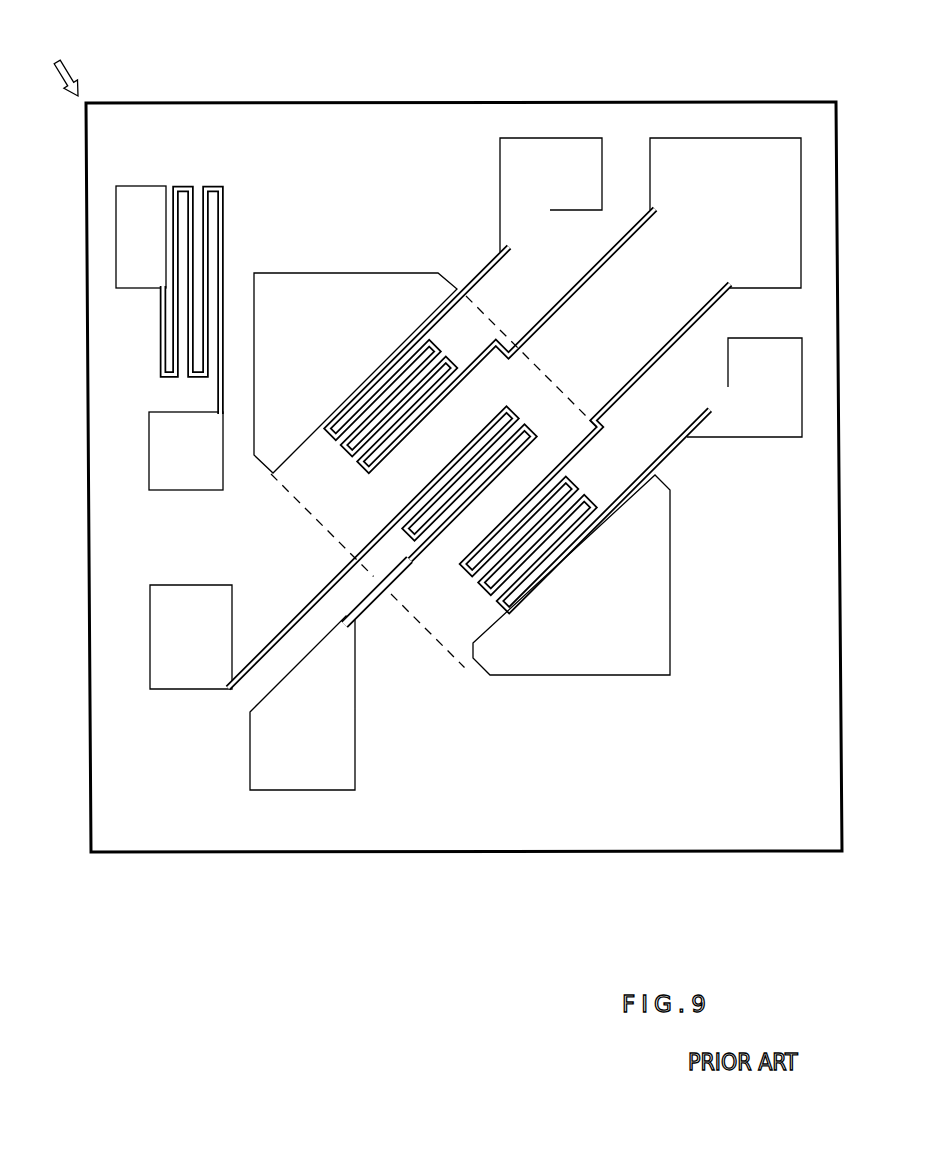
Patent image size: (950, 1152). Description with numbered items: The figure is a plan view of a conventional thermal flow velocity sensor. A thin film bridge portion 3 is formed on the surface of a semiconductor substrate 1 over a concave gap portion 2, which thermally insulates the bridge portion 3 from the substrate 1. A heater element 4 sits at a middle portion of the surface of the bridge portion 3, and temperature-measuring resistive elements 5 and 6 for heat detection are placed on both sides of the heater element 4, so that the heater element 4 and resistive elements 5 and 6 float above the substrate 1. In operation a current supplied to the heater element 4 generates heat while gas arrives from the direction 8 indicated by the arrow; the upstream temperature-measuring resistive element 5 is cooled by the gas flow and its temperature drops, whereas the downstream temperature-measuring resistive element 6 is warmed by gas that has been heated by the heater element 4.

The semiconductor substrate 1 is at (455, 103).
The concave gap portion 2 is at (607, 655).
The thin film bridge portion 3 is at (427, 583).
The heater element 4 is at (405, 525).
The temperature-measuring resistive element 5 is at (432, 342).
The temperature-measuring resistive element 6 is at (597, 497).
The direction 8 is at (71, 50).